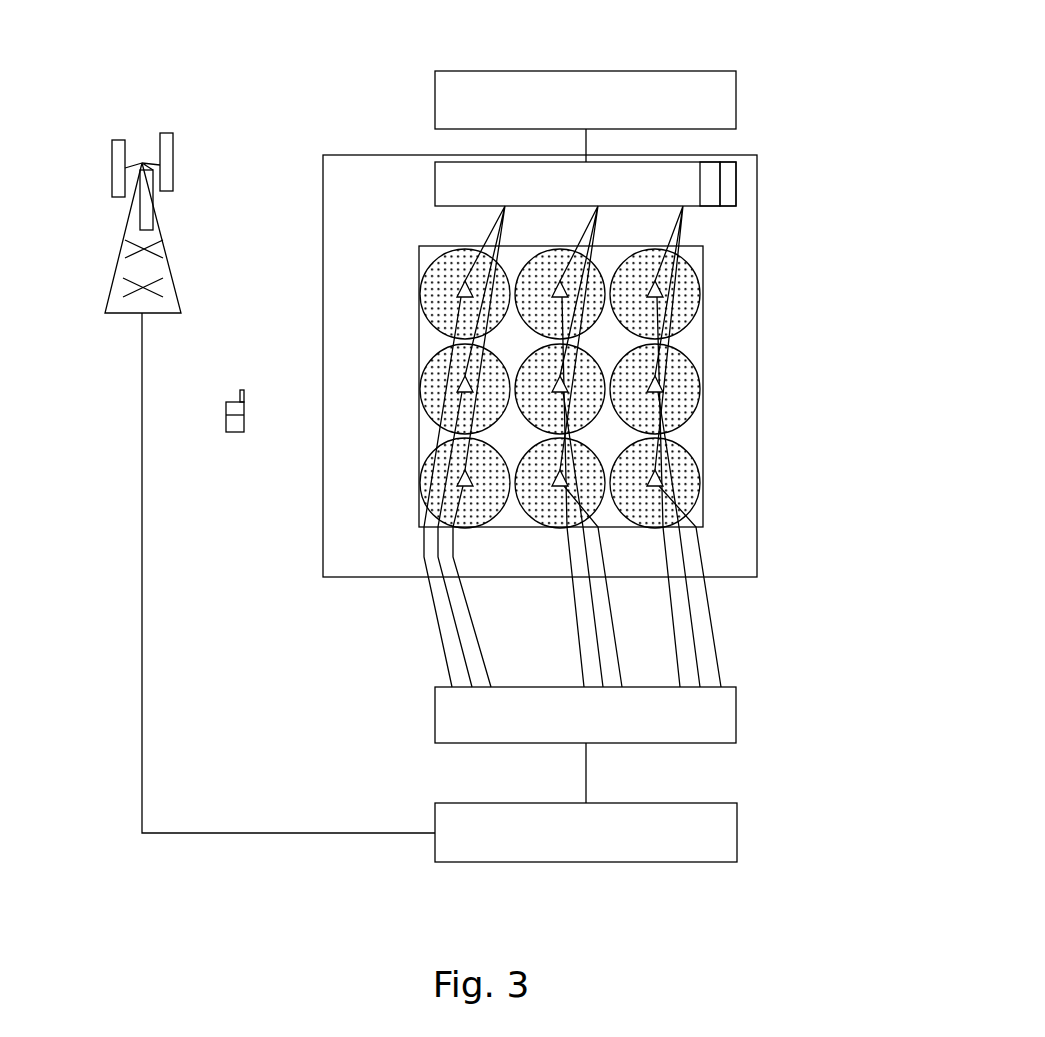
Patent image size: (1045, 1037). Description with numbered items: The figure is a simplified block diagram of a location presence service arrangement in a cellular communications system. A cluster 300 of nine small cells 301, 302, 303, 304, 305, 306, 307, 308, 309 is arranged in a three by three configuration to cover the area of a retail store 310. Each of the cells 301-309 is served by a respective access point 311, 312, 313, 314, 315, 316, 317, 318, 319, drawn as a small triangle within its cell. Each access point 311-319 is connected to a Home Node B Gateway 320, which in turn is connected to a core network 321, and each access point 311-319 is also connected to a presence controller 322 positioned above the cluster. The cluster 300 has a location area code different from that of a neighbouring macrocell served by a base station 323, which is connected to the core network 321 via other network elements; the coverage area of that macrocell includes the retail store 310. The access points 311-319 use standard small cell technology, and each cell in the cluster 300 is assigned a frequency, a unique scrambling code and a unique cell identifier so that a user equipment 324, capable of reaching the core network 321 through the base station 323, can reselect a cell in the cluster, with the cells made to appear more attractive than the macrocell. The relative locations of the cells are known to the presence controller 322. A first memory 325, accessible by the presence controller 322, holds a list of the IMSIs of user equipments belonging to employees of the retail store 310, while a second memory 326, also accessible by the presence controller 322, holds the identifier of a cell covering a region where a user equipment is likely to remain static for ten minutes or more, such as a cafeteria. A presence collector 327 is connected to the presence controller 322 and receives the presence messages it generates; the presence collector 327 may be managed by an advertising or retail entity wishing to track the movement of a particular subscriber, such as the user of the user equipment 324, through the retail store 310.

The cluster of small cells 300 is at (403, 498).
The small cell 301 is at (465, 294).
The small cell 302 is at (560, 294).
The small cell 303 is at (655, 294).
The small cell 304 is at (465, 389).
The small cell 305 is at (560, 389).
The small cell 306 is at (655, 389).
The small cell 307 is at (465, 483).
The small cell 308 is at (560, 483).
The small cell 309 is at (655, 483).
The retail store 310 is at (733, 577).
The access point 311 is at (458, 286).
The access point 312 is at (557, 283).
The access point 313 is at (658, 288).
The access point 314 is at (458, 386).
The access point 315 is at (570, 385).
The access point 316 is at (660, 395).
The access point 317 is at (460, 428).
The access point 318 is at (522, 517).
The access point 319 is at (662, 478).
The Home Node B Gateway 320 is at (736, 718).
The core network 321 is at (737, 822).
The presence controller 322 is at (447, 162).
The base station 323 is at (133, 313).
The user equipment 324 is at (233, 432).
The first memory 325 is at (712, 170).
The second memory 326 is at (730, 193).
The presence collector 327 is at (693, 71).